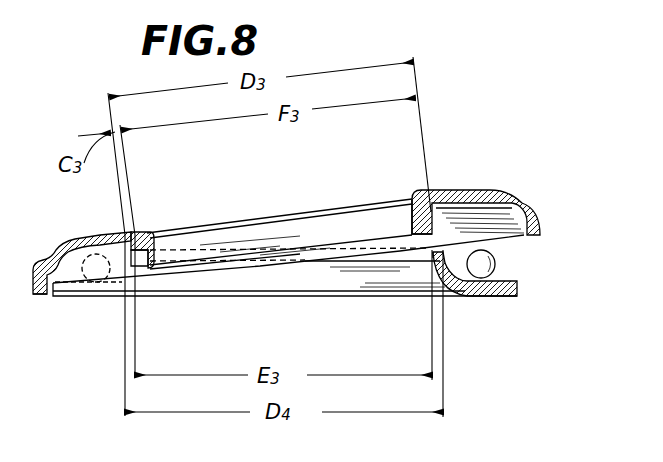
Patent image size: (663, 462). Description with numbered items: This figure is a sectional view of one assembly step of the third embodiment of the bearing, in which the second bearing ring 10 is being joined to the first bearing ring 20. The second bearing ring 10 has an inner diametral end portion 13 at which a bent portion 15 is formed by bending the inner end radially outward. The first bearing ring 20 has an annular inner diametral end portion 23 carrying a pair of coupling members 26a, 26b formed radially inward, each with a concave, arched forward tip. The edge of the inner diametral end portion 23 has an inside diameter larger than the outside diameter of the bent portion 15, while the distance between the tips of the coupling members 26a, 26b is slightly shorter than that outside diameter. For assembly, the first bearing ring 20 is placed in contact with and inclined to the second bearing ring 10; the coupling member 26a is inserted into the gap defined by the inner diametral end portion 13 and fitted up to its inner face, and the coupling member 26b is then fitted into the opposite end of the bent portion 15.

The second bearing ring 10 is at (467, 190).
The inner diametral end portion 13 is at (150, 232).
The bent portion 15 is at (134, 257).
The first bearing ring 20 is at (493, 297).
The inner diametral end portion 23 is at (110, 238).
The coupling member 26a is at (118, 264).
The coupling member 26b is at (440, 272).